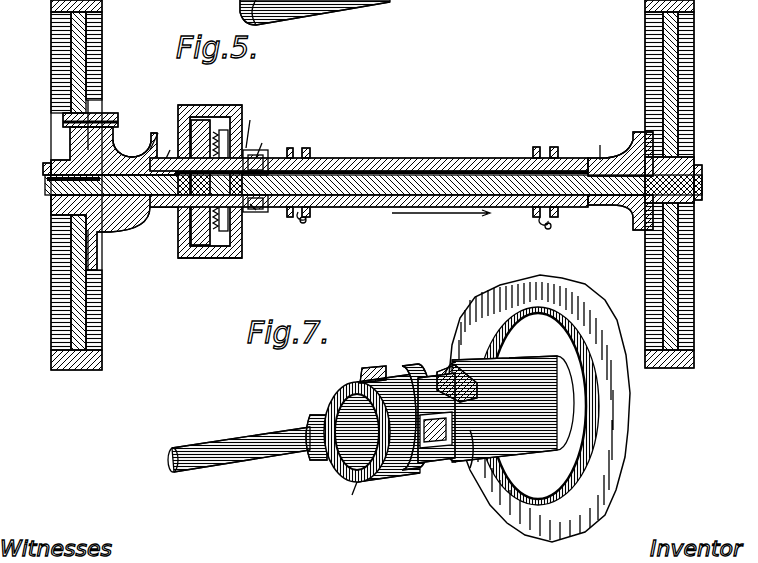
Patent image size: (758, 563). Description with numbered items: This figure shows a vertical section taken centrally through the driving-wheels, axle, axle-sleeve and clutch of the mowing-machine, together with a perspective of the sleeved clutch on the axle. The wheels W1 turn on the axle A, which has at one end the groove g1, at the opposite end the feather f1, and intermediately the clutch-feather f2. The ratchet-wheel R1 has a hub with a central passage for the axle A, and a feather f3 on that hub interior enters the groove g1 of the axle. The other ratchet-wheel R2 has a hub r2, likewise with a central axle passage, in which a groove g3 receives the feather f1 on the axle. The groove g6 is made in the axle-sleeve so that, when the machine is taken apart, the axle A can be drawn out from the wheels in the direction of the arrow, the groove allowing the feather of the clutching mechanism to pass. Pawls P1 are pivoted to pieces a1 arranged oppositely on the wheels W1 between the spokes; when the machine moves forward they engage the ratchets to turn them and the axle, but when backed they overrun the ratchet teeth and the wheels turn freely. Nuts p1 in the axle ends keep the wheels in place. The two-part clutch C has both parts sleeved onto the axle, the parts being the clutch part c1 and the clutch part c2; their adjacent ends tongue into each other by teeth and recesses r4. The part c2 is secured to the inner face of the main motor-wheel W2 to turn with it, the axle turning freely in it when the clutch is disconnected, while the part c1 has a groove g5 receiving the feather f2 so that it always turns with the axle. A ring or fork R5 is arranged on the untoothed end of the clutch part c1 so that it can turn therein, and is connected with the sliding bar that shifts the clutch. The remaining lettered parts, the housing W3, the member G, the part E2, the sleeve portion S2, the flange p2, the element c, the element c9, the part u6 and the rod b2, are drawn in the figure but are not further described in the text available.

In FIG. 5, the axle A is at (405, 172).
In FIG. 5, the wheels W1 is at (52, 72).
In FIG. 5, the main motor-wheel W2 is at (722, 82).
In FIG. 7, the main motor-wheel W2 is at (624, 452).
In FIG. 5, the third wall / housing W3 is at (200, 122).
In FIG. 5, the ratchet-wheel R1 is at (112, 136).
In FIG. 5, the ratchet-wheel R2 is at (640, 132).
In FIG. 5, the ring or fork R5 is at (265, 158).
In FIG. 7, the ring or fork R5 is at (374, 367).
In FIG. 5, the pawls P1 is at (110, 118).
In FIG. 5, the nuts p1 is at (44, 170).
In FIG. 5, the flange p2 is at (704, 172).
In FIG. 5, the hub r2 is at (628, 152).
In FIG. 7, the recesses r4 is at (450, 368).
In FIG. 5, the feather f1 is at (598, 145).
In FIG. 5, the clutch-feather f2 is at (261, 143).
In FIG. 5, the feather f3 is at (158, 134).
In FIG. 5, the groove g1 is at (166, 151).
In FIG. 5, the groove g3 is at (562, 162).
In FIG. 7, the groove g5 is at (340, 398).
In FIG. 5, the groove g6 is at (455, 160).
In FIG. 5, the spring G is at (220, 178).
In FIG. 5, the housing E2 is at (210, 271).
In FIG. 5, the sleeve S2 is at (338, 164).
In FIG. 5, the pieces a1 is at (90, 112).
In FIG. 7, the collar c is at (472, 466).
In FIG. 5, the clutch part c1 is at (246, 207).
In FIG. 7, the clutch part c1 is at (352, 494).
In FIG. 5, the clutch part c2 is at (254, 126).
In FIG. 5, the collar c9 is at (545, 227).
In FIG. 5, the nut u6 is at (259, 213).
In FIG. 7, the rod b2 is at (226, 446).
In FIG. 7, the two-part clutch C is at (389, 414).